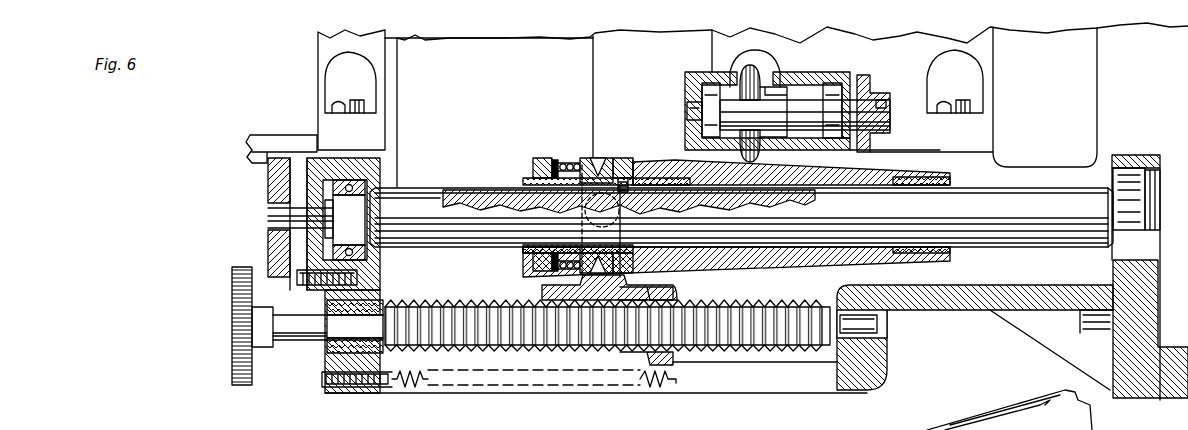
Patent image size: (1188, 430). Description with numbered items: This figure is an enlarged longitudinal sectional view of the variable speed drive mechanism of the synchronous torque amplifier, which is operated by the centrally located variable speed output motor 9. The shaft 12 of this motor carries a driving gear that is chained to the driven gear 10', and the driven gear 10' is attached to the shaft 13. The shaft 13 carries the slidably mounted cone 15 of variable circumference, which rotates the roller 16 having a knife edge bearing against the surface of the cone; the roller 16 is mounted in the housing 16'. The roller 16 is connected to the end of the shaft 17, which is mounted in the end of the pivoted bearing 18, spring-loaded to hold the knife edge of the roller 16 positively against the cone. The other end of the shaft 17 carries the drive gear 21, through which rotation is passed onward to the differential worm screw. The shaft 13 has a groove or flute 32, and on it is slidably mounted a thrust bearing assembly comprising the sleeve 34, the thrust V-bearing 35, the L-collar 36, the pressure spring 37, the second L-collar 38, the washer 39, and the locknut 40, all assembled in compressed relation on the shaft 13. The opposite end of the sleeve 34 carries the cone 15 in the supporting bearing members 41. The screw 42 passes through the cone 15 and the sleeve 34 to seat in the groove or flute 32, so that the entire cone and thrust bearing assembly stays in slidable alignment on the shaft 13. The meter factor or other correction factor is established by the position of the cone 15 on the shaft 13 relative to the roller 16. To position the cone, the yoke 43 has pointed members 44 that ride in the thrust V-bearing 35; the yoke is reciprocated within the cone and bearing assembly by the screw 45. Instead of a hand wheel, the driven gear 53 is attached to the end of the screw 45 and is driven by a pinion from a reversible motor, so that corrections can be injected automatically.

The variable speed output motor 9 is at (478, 101).
The driven gear 10' is at (271, 224).
The shaft 12 is at (283, 135).
The shaft 13 is at (275, 214).
The cone 15 is at (646, 160).
The roller 16 is at (769, 103).
The housing 16' is at (746, 64).
The shaft 17 is at (800, 108).
The pivoted bearing 18 is at (690, 76).
The drive gear 21 is at (418, 390).
The groove or flute 32 is at (474, 187).
The sleeve 34 is at (523, 181).
The thrust V-bearing 35 is at (598, 165).
The L-collar 36 is at (590, 158).
The pressure spring 37 is at (582, 170).
The second L-collar 38 is at (566, 162).
The washer 39 is at (553, 160).
The locknut 40 is at (534, 160).
The supporting bearing members 41 is at (670, 162).
The screw 42 is at (623, 160).
The yoke 43 is at (568, 280).
The pointed members 44 is at (620, 213).
The screw 45 is at (765, 303).
The driven gear 53 is at (232, 352).